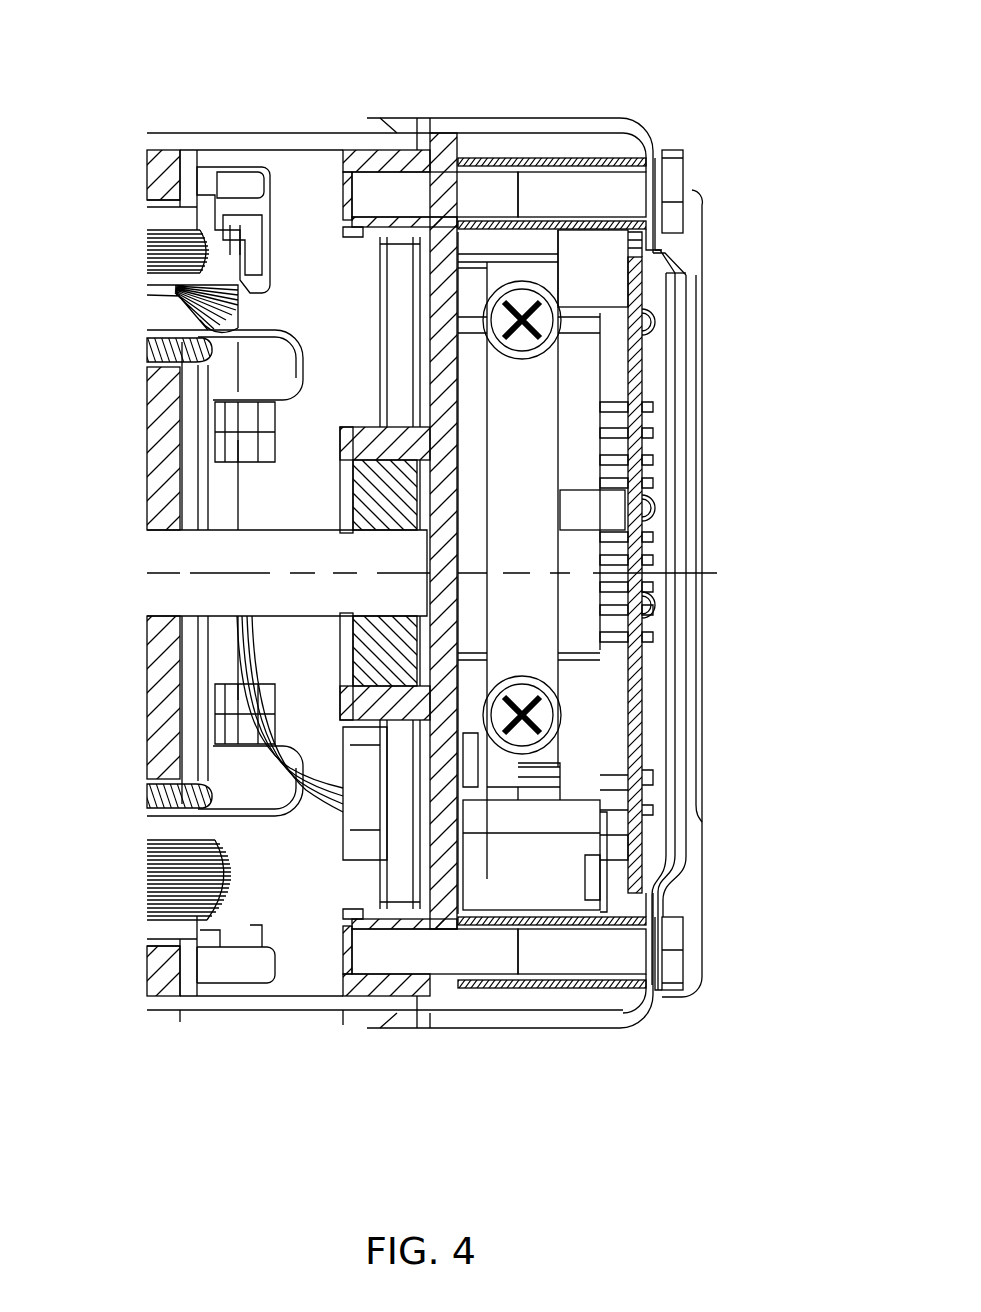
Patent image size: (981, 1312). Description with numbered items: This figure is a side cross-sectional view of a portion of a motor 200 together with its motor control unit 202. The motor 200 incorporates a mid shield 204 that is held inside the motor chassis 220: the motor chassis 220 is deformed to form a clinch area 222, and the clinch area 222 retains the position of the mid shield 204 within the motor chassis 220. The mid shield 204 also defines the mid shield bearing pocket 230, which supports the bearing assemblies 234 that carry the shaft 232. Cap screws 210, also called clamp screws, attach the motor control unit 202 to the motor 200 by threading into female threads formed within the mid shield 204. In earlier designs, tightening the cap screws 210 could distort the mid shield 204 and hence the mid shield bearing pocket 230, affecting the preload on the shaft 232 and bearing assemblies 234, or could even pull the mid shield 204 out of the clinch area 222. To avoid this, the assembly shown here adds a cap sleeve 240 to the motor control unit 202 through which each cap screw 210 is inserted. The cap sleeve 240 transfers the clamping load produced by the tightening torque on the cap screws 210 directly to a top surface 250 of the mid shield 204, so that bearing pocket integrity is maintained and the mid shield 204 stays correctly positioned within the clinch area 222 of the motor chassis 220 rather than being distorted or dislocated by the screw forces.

The motor 200 is at (158, 133).
The motor control unit 202 is at (645, 130).
The mid shield 204 is at (343, 440).
The cap screw 210 is at (685, 172).
The motor chassis 220 is at (233, 133).
The clinch area 222 is at (357, 132).
The mid shield bearing pocket 230 is at (325, 490).
The shaft 232 is at (322, 620).
The bearing assemblies 234 is at (420, 483).
The cap sleeve 240 is at (573, 193).
The top surface 250 is at (520, 190).